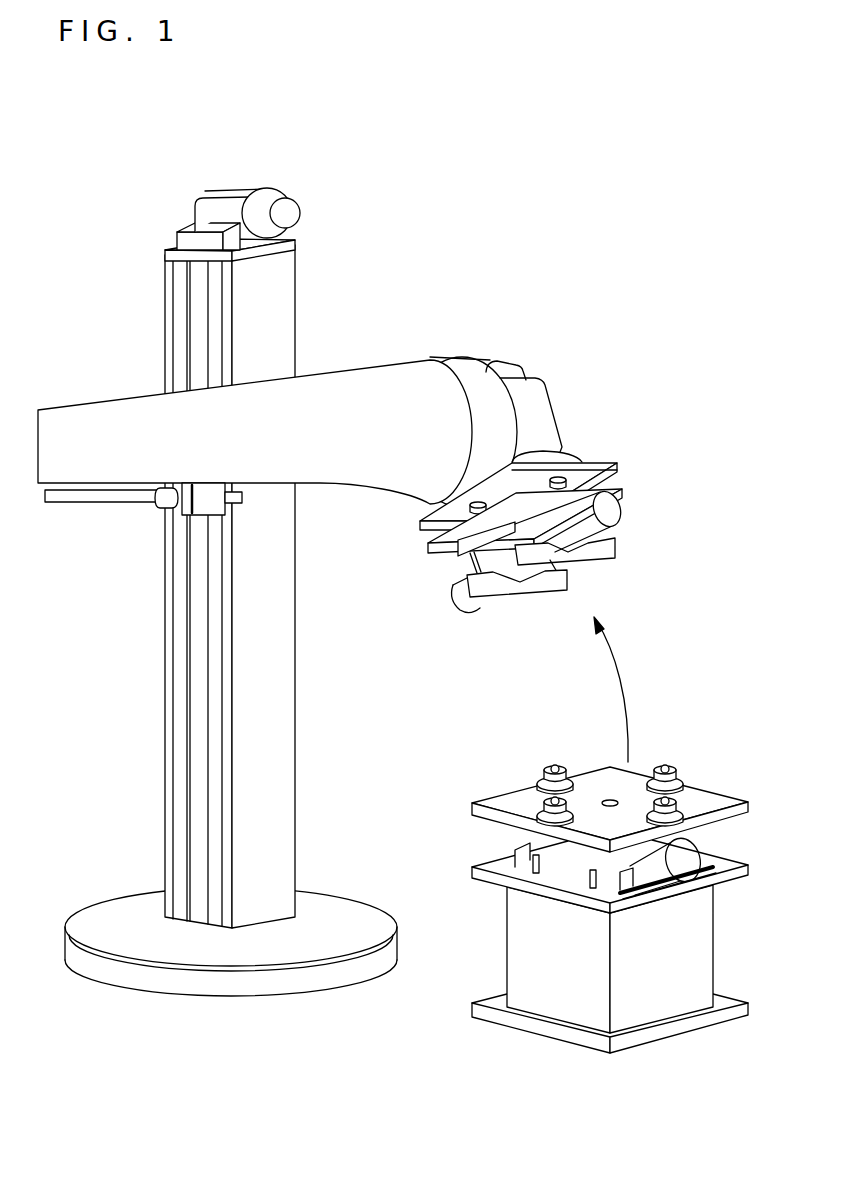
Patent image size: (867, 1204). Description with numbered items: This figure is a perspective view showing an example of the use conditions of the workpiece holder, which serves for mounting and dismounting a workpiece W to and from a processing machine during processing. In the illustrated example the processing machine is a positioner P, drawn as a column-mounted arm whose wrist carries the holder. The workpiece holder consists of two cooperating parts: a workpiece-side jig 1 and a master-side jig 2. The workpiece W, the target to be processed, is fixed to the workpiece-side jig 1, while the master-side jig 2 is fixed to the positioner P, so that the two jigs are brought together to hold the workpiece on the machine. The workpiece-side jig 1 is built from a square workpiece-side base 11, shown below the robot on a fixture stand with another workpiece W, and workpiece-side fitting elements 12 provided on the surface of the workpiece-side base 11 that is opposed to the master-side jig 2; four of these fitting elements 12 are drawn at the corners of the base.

The positioner P is at (362, 368).
The master-side jig 2 is at (618, 462).
The workpiece-side jig 1 is at (623, 489).
The workpiece W is at (617, 522).
The workpiece-side base 11 is at (703, 790).
The workpiece-side fitting elements 12 is at (540, 782).